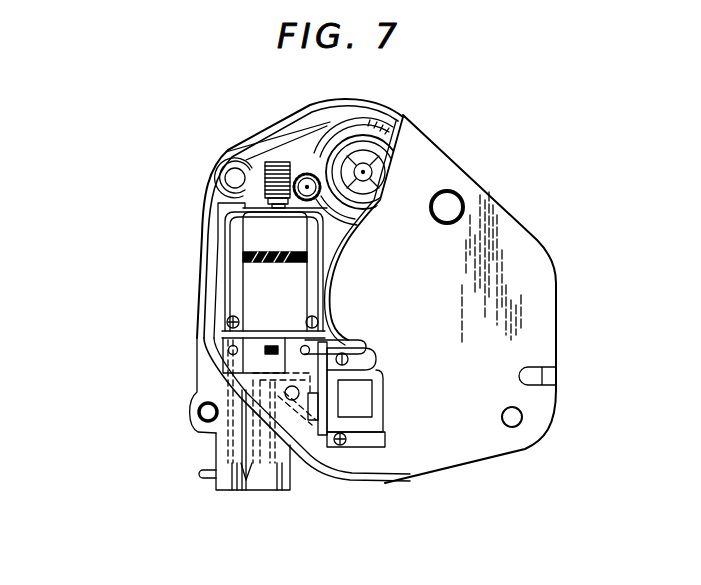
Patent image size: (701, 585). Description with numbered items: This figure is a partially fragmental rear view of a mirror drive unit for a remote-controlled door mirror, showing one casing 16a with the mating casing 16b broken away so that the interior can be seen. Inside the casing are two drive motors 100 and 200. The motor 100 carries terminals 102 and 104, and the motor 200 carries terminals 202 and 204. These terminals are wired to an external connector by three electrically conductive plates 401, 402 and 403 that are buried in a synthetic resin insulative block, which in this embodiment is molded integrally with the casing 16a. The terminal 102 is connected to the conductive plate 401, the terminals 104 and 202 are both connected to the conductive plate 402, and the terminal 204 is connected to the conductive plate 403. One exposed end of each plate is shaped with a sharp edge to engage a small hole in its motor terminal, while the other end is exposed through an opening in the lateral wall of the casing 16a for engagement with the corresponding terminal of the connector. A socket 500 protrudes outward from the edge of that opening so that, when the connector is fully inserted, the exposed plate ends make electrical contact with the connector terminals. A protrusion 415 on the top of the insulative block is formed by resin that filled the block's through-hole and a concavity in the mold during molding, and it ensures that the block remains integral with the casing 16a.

The casing 16a is at (197, 326).
The casing 16b is at (475, 435).
The motor 100 is at (283, 297).
The terminal 102 is at (228, 352).
The terminal 104 is at (345, 347).
The motor 200 is at (353, 400).
The terminal 202 is at (372, 363).
The terminal 204 is at (388, 446).
The protrusion 415 is at (288, 393).
The conductive plate 401 is at (232, 492).
The conductive plate 402 is at (256, 492).
The conductive plate 403 is at (275, 493).
The socket 500 is at (293, 487).